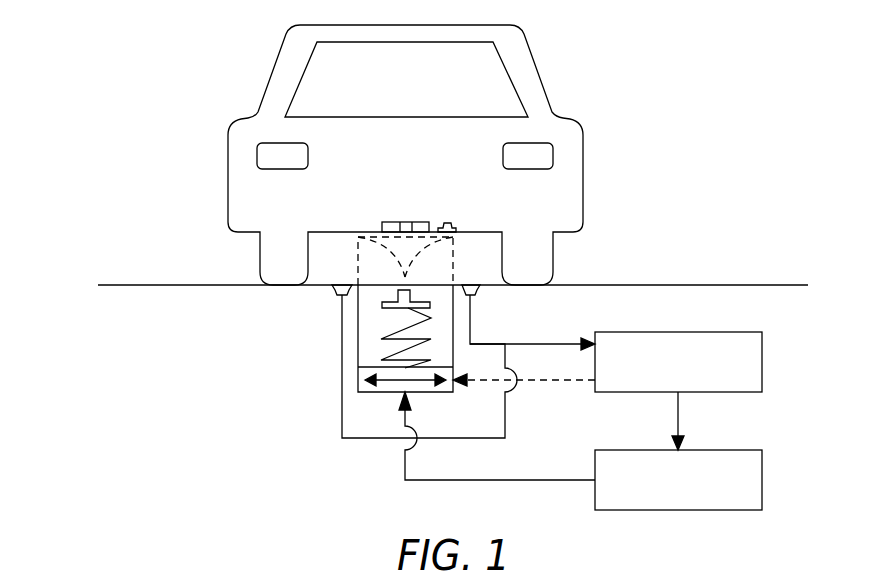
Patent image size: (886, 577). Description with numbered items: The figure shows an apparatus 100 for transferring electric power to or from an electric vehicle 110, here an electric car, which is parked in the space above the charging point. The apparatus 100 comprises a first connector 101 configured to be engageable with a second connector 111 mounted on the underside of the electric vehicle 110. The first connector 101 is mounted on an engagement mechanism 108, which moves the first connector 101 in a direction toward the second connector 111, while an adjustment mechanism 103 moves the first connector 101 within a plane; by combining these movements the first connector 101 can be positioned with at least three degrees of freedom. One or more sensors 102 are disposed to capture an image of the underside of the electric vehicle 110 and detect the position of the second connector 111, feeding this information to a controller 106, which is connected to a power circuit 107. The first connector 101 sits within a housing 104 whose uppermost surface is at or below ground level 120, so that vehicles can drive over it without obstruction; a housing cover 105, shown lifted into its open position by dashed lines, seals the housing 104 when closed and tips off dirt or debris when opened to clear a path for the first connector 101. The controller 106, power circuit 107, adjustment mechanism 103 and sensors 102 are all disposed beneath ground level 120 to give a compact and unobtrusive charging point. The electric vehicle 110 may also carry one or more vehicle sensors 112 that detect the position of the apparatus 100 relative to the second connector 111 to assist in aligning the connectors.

The apparatus 100 is at (311, 462).
The first connector 101 is at (387, 300).
The sensors 102 is at (333, 289).
The adjustment mechanism 103 is at (358, 381).
The housing 104 is at (358, 345).
The housing cover 105 is at (453, 255).
The controller 106 is at (762, 360).
The power circuit 107 is at (762, 480).
The engagement mechanism 108 is at (431, 337).
The electric vehicle 110 is at (228, 177).
The second connector 111 is at (394, 222).
The vehicle sensors 112 is at (449, 222).
The ground level 120 is at (773, 285).